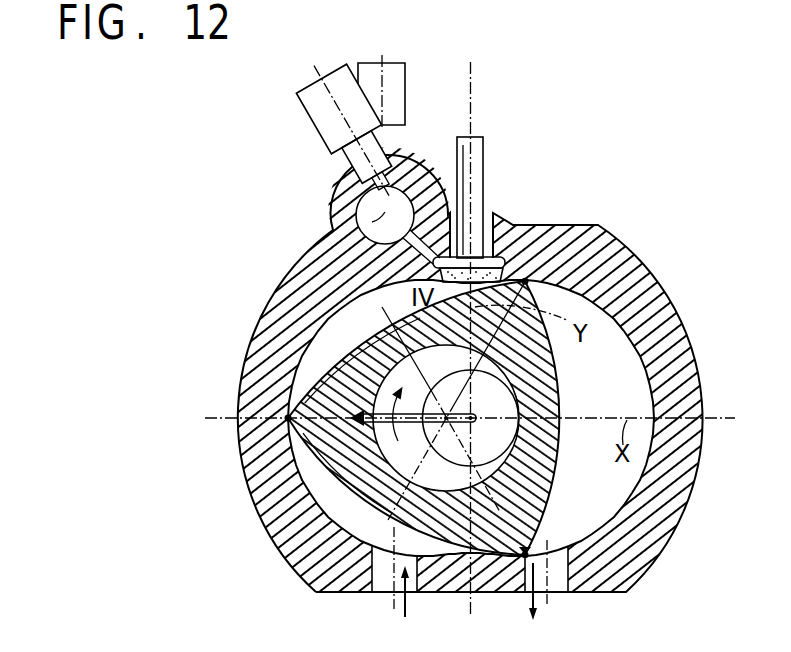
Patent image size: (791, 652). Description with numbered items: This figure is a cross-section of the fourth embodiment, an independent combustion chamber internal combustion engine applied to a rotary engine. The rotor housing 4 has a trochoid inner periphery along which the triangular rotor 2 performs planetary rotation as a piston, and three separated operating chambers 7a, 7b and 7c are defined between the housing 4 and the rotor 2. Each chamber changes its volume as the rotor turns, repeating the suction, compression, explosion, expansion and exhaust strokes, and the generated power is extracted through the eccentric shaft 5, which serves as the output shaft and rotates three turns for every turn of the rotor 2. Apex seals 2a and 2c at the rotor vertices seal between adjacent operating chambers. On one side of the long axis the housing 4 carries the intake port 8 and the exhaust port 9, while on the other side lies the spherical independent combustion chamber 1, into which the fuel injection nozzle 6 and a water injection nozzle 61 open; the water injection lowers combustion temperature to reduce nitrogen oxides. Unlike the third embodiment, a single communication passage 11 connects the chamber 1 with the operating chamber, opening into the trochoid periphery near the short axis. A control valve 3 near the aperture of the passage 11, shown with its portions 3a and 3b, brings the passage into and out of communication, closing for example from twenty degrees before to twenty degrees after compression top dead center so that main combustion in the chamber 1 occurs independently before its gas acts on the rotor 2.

The independent combustion chamber 1 is at (410, 152).
The communication passage 11 is at (404, 194).
The triangular rotor 2 is at (548, 487).
The apex seal 2a is at (245, 487).
The apex seal 2c is at (527, 553).
The control valve 3 is at (486, 167).
The sensor tip 3a is at (507, 248).
The sensor body 3b is at (480, 200).
The rotor housing 4 is at (628, 243).
The eccentric shaft 5 is at (500, 434).
The fuel injection nozzle 6 is at (326, 69).
The water injection nozzle 61 is at (394, 63).
The operating chamber 7a is at (364, 518).
The operating chamber 7b is at (366, 338).
The operating chamber 7c is at (618, 390).
The intake port 8 is at (383, 592).
The exhaust port 9 is at (560, 589).